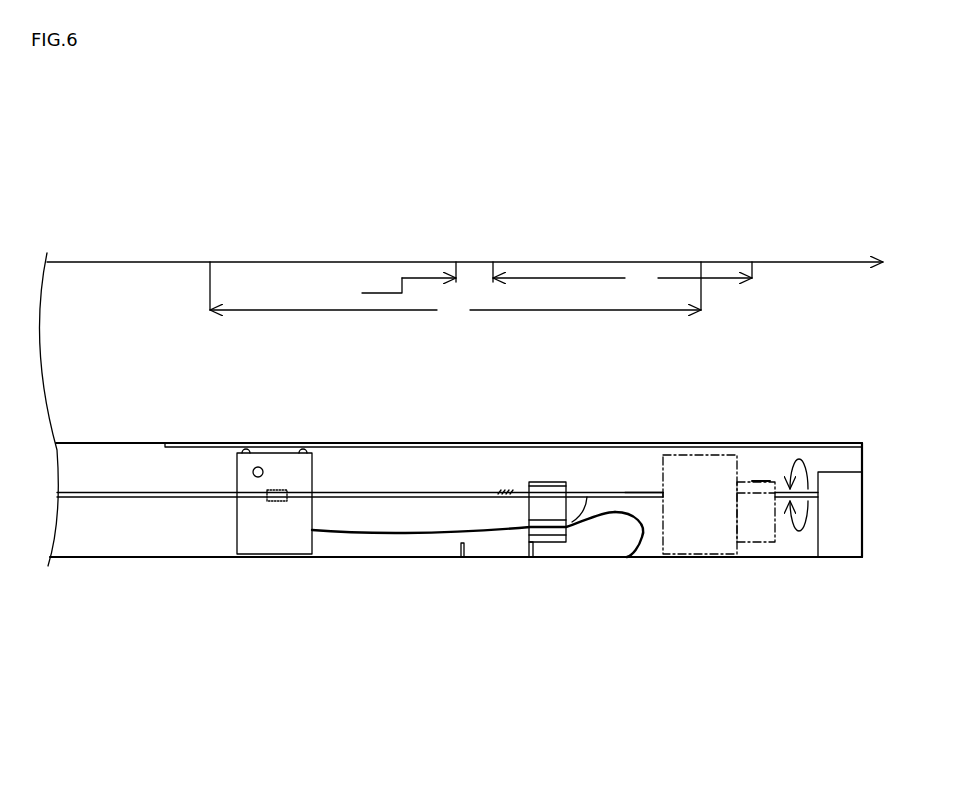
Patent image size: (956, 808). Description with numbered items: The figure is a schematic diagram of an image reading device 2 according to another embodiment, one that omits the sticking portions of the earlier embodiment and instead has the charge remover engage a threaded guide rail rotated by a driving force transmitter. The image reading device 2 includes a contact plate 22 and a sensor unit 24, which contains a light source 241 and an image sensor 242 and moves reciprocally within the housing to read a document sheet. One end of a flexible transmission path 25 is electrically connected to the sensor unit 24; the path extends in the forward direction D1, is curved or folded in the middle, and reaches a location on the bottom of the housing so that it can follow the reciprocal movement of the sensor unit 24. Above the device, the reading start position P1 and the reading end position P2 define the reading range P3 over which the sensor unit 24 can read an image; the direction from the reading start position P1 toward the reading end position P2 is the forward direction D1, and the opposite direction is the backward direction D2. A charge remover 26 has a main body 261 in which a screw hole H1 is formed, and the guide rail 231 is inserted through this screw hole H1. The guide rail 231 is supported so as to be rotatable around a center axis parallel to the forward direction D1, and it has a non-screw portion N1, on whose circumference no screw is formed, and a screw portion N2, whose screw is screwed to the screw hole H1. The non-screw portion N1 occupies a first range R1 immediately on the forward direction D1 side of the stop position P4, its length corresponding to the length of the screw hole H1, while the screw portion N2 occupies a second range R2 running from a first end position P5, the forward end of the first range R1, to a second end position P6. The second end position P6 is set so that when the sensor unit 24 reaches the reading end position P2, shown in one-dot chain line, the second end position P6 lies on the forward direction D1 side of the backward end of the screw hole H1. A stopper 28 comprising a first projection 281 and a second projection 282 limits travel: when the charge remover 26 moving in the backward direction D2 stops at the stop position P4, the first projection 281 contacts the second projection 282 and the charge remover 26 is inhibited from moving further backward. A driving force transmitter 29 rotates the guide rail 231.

The image reading device 2 is at (100, 405).
The contact plate 22 is at (357, 450).
The guide rail 231 is at (155, 498).
The sensor unit 24 is at (236, 530).
The light source 241 is at (259, 478).
The image sensor 242 is at (280, 501).
The flexible transmission path 25 is at (388, 537).
The charge remover 26 is at (577, 542).
The main body 261 is at (540, 482).
The stopper 28 is at (634, 530).
The first projection 281 is at (466, 548).
The second projection 282 is at (544, 577).
The driving force transmitter 29 is at (840, 545).
The non-screw portion N1 is at (476, 491).
The screw portion N2 is at (630, 491).
The screw hole H1 is at (566, 482).
The forward direction D1 is at (508, 127).
The backward direction D2 is at (398, 160).
The reading start position P1 is at (208, 272).
The reading end position P2 is at (699, 272).
The reading range P3 is at (455, 310).
The stop position P4 is at (452, 258).
The first end position P5 is at (492, 258).
The second end position P6 is at (750, 256).
The first range R1 is at (409, 280).
The second range R2 is at (622, 278).